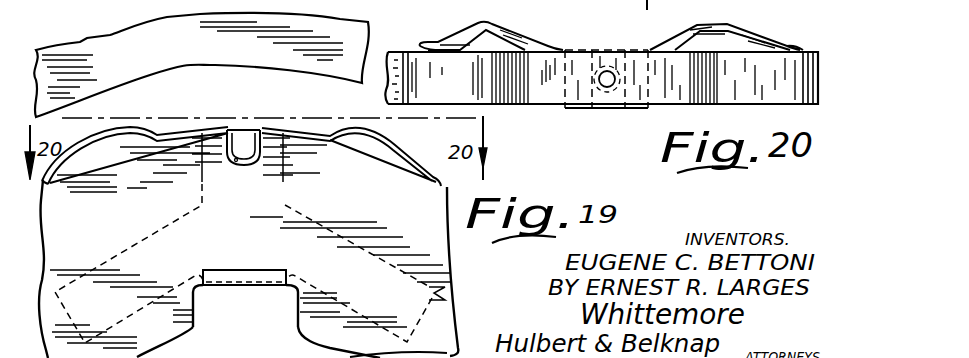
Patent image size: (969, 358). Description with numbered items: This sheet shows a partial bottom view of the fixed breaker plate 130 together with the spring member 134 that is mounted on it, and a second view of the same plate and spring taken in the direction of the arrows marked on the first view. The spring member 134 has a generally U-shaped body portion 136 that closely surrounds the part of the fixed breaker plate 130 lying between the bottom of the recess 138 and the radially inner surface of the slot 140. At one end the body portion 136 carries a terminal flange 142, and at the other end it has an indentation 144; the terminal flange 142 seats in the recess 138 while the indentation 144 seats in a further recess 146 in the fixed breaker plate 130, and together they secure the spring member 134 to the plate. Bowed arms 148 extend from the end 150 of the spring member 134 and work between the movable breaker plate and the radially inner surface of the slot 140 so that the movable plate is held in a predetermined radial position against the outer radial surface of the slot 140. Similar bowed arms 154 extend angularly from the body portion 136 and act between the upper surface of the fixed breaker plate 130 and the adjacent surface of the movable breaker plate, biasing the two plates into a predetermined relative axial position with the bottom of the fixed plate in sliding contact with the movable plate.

In FIG. 19, the fixed breaker plate 130 is at (492, 288).
In FIG. 20, the fixed breaker plate 130 is at (817, 52).
In FIG. 19, the spring member 134 is at (246, 290).
In FIG. 20, the spring member 134 is at (607, 30).
In FIG. 19, the U-shaped body portion 136 is at (285, 205).
In FIG. 20, the U-shaped body portion 136 is at (652, 37).
In FIG. 19, the recess 138 is at (194, 318).
In FIG. 19, the slot 140 is at (130, 92).
In FIG. 19, the terminal flange 142 is at (262, 249).
In FIG. 20, the terminal flange 142 is at (640, 108).
In FIG. 19, the indentation 144 is at (252, 130).
In FIG. 20, the indentation 144 is at (470, 24).
In FIG. 19, the recess 146 is at (238, 162).
In FIG. 20, the recess 146 is at (429, 13).
In FIG. 19, the bowed arms 148 is at (370, 134).
In FIG. 20, the bowed arms 148 is at (508, 104).
In FIG. 19, the end 150 is at (212, 128).
In FIG. 19, the bowed arms 154 is at (135, 247).
In FIG. 20, the bowed arms 154 is at (712, 24).